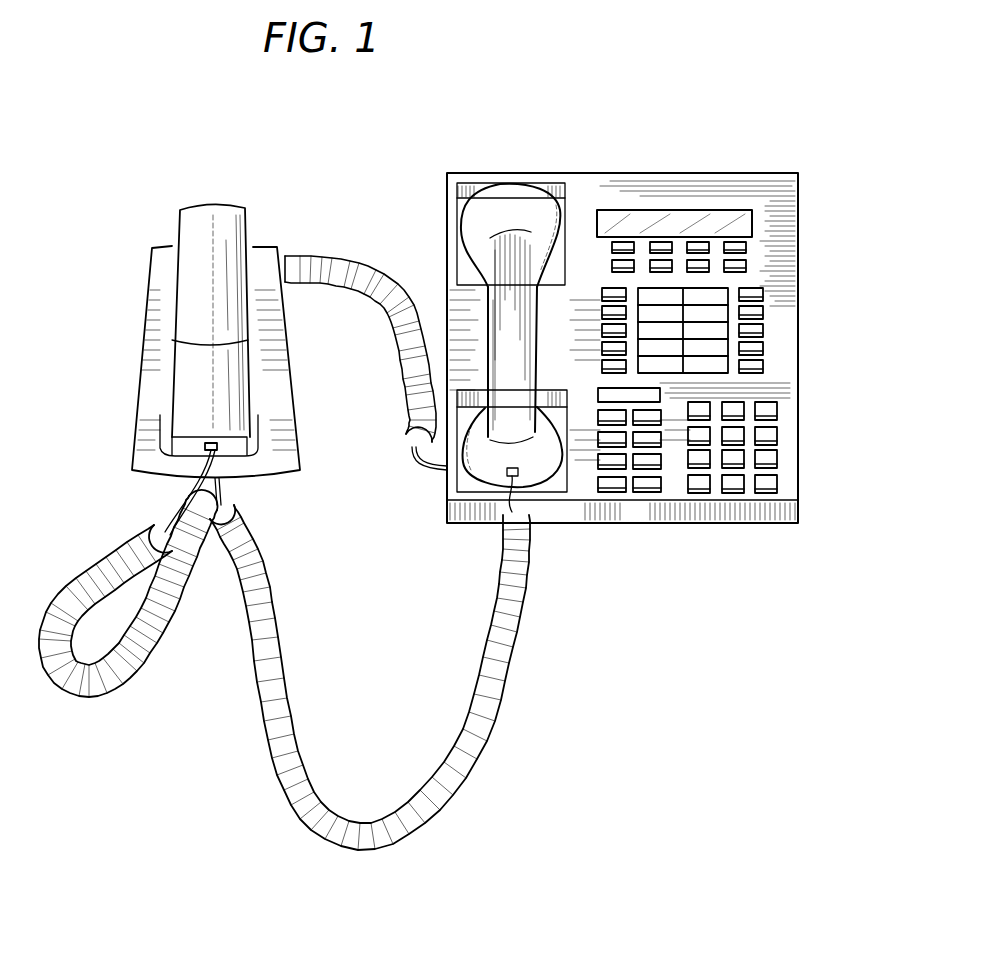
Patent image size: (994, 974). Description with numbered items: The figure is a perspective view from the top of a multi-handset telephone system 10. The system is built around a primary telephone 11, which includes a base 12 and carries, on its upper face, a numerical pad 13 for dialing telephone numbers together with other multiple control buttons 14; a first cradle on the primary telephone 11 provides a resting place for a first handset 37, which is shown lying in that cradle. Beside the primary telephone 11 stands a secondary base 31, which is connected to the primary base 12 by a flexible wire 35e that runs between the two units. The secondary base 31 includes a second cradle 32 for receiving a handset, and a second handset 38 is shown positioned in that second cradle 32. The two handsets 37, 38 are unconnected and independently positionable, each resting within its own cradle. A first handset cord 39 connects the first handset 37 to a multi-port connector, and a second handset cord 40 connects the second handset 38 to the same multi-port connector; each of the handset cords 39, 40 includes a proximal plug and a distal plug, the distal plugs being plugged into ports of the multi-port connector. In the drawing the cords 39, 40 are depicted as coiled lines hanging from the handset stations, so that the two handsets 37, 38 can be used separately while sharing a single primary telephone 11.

The multi-handset telephone system 10 is at (622, 608).
The primary telephone 11 is at (798, 248).
The base 12 is at (758, 507).
The numerical pad 13 is at (765, 457).
The control buttons 14 is at (740, 262).
The first handset 37 is at (495, 208).
The secondary base 31 is at (272, 247).
The second handset 38 is at (190, 206).
The second cradle 32 is at (167, 440).
The flexible wire 35e is at (383, 328).
The second handset cord 40 is at (93, 686).
The first handset cord 39 is at (400, 848).